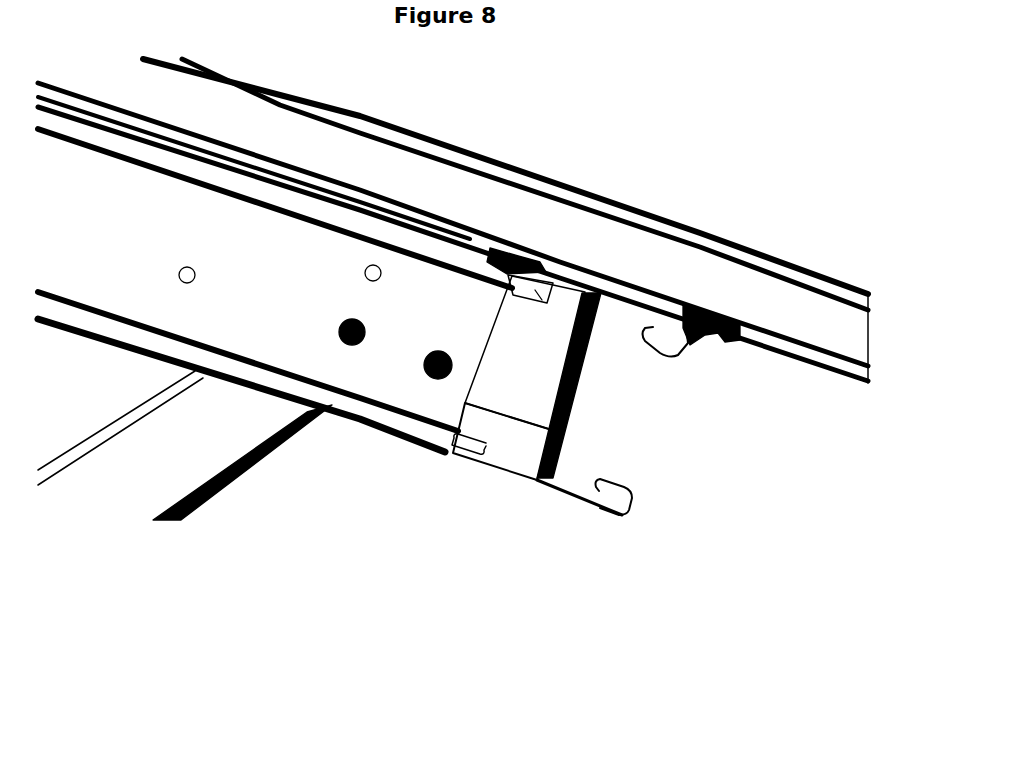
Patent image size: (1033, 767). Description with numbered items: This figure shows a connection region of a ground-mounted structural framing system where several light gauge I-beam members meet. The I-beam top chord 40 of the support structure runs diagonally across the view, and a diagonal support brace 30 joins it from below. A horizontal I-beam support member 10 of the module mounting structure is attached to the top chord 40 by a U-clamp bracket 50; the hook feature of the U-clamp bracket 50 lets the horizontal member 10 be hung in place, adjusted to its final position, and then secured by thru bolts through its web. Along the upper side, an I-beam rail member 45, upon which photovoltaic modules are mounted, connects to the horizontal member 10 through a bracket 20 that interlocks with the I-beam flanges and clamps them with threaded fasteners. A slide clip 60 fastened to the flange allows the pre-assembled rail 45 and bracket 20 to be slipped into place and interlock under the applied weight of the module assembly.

The horizontal I-beam support member 10 is at (565, 496).
The bracket 20 is at (723, 340).
The diagonal support brace 30 is at (147, 481).
The I-beam top chord 40 is at (222, 237).
The I-beam rail member 45 is at (748, 287).
The U-clamp bracket 50 is at (531, 380).
The slide clip 60 is at (518, 266).